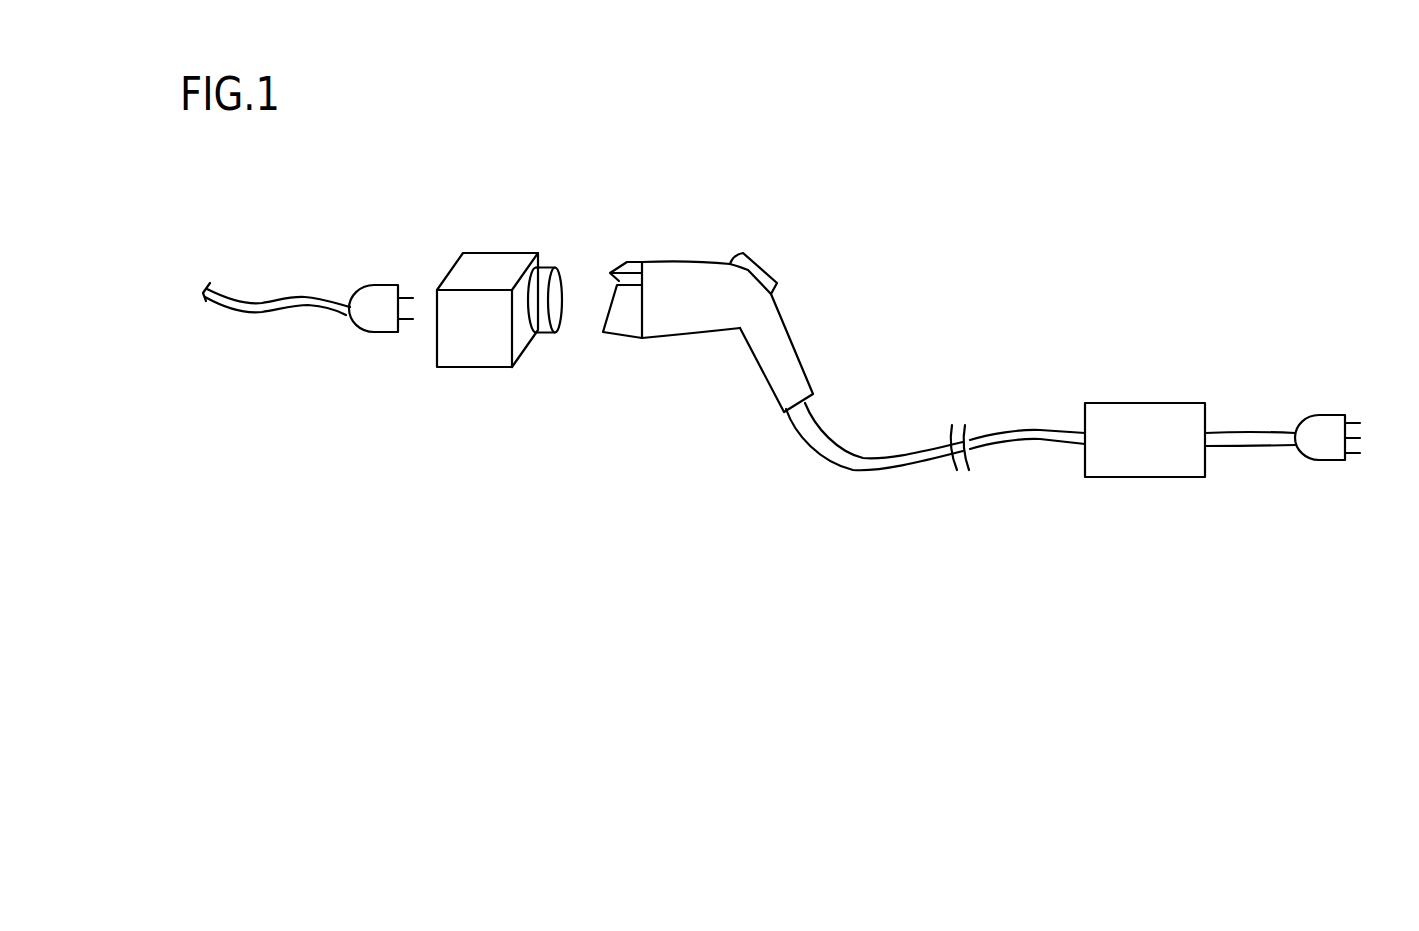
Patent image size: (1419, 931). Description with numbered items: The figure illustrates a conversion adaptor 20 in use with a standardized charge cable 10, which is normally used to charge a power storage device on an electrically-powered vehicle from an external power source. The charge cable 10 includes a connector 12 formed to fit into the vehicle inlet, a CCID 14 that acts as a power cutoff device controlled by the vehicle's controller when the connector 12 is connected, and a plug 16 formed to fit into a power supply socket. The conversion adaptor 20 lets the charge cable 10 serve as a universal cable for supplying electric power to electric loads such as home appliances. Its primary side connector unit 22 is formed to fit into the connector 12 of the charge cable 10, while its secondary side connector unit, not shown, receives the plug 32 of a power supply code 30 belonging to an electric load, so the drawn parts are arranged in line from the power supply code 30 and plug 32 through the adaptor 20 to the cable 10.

The charge cable 10 is at (925, 293).
The connector 12 is at (713, 332).
The CCID 14 is at (1150, 477).
The plug 16 is at (1328, 460).
The conversion adaptor 20 is at (498, 252).
The primary side connector unit 22 is at (553, 313).
The power supply code 30 is at (317, 223).
The plug 32 is at (383, 333).